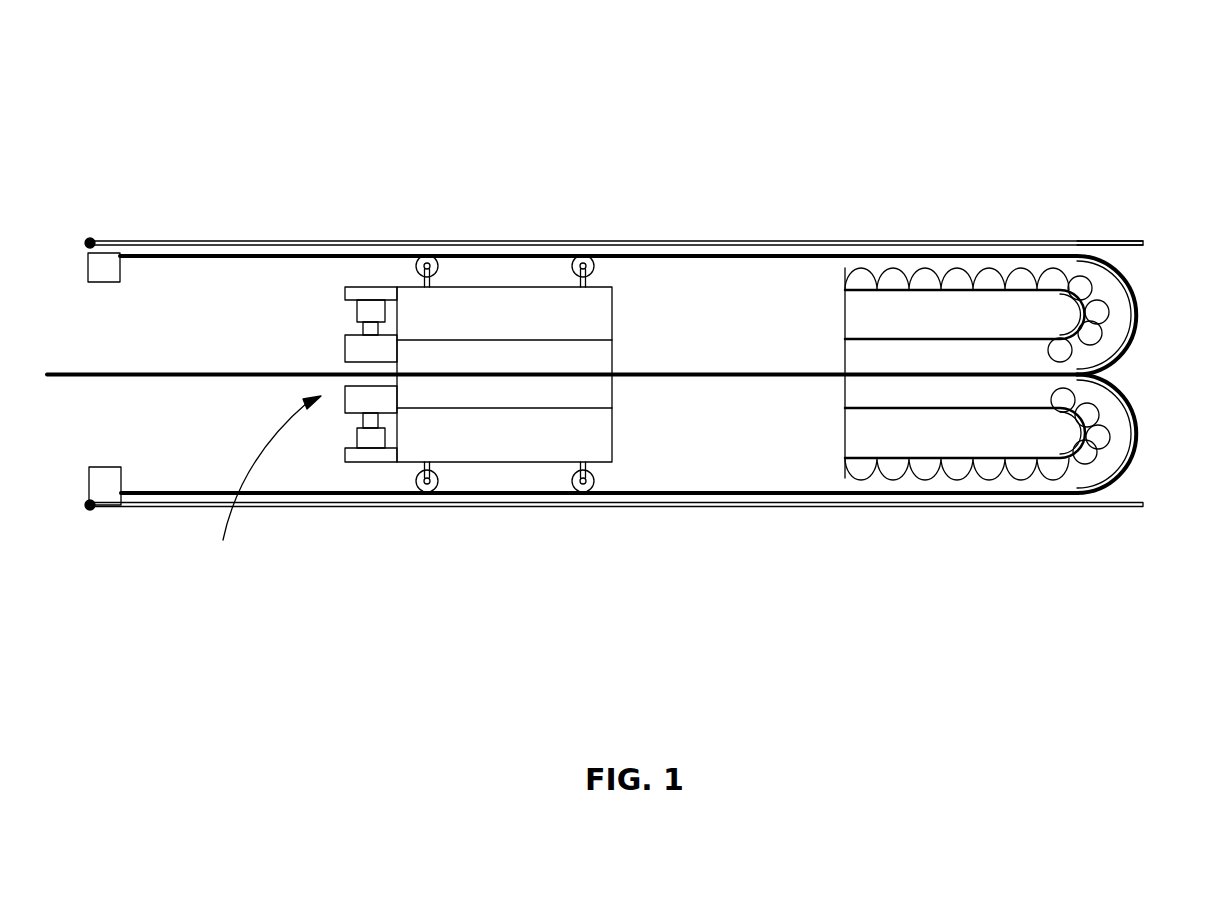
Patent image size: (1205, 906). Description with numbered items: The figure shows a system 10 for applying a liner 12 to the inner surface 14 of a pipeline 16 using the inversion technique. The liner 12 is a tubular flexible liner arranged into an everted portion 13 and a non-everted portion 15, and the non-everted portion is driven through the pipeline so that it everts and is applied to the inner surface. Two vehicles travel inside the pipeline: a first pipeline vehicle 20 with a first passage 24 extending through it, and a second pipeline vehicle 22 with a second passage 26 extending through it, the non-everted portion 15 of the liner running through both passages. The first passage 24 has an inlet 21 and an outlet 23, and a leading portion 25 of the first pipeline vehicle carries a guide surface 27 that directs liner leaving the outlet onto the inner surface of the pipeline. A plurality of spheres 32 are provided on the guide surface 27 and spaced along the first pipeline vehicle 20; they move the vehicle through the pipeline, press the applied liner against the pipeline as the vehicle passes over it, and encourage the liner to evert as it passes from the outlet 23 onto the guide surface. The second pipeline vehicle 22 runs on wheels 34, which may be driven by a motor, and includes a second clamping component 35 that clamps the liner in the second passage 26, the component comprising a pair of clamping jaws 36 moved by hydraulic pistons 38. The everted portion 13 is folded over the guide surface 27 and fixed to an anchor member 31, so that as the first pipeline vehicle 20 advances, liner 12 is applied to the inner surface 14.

The system 10 is at (703, 85).
The liner 12 is at (200, 256).
The everted portion 13 is at (1037, 495).
The inner surface 14 is at (752, 243).
The non-everted portion 15 is at (770, 370).
The pipeline 16 is at (1122, 241).
The first pipeline vehicle 20 is at (992, 308).
The inlet 21 is at (845, 402).
The second pipeline vehicle 22 is at (610, 448).
The outlet 23 is at (1090, 413).
The first passage 24 is at (1092, 368).
The leading portion 25 is at (1092, 293).
The second passage 26 is at (590, 410).
The guide surface 27 is at (1092, 322).
The anchor member 31 is at (120, 245).
The spheres 32 is at (988, 480).
The wheels 34 is at (580, 259).
The second clamping component 35 is at (262, 488).
The clamping jaws 36 is at (348, 402).
The hydraulic pistons 38 is at (368, 418).